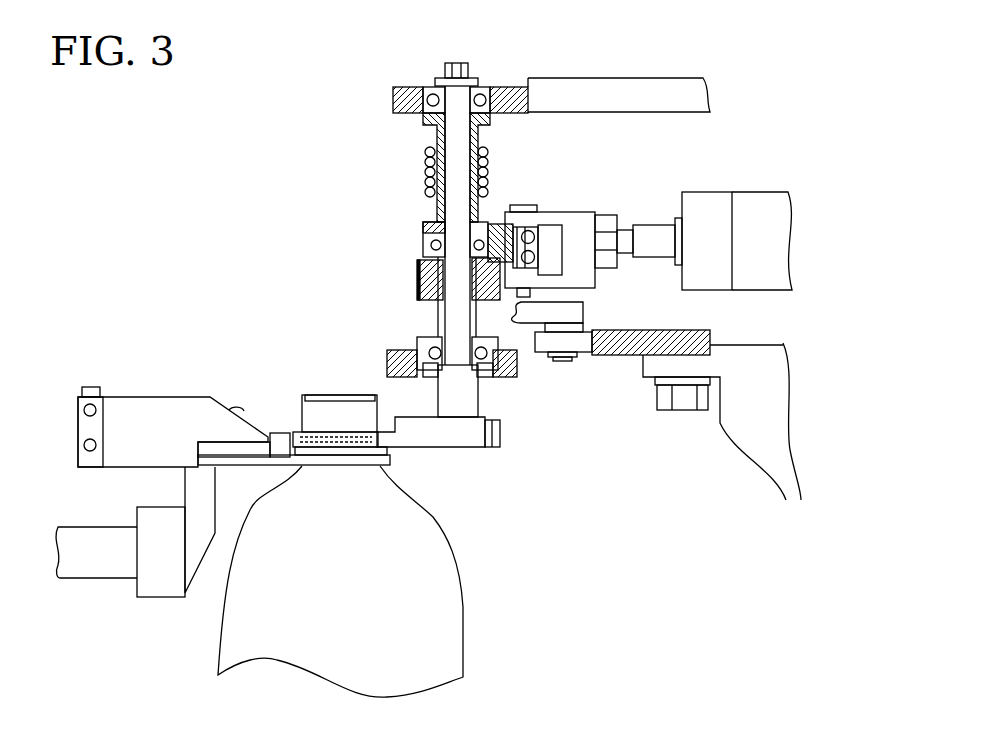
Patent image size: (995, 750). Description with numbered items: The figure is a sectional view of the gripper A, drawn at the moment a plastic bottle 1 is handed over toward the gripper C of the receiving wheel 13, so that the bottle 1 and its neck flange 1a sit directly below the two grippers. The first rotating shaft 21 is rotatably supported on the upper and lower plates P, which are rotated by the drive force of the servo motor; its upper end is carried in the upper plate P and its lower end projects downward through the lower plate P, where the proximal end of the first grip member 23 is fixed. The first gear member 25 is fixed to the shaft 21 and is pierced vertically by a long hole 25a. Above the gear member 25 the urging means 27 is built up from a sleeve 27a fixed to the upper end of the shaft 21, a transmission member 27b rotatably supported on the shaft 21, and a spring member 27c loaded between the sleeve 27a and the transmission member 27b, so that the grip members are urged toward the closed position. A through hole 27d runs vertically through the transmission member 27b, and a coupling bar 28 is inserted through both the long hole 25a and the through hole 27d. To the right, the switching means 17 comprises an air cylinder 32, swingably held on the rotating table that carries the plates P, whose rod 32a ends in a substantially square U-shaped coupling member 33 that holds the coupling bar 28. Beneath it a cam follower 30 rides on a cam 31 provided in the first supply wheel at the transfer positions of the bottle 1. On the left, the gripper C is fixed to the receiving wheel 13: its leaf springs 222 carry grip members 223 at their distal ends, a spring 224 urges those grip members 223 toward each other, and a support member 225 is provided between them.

The plastic bottle 1 is at (450, 627).
The boss of body 1a is at (383, 450).
The receiving wheel 13 is at (90, 568).
The switching means 17 is at (755, 193).
The first rotating shaft 21 is at (452, 98).
The first grip member 23 is at (461, 438).
The first gear member 25 is at (430, 278).
The long hole 25a is at (515, 262).
The urging means 27 is at (489, 173).
The sleeve 27a is at (490, 122).
The transmission member 27b is at (423, 231).
The spring member 27c is at (430, 151).
The through hole 27d is at (527, 226).
The coupling bar 28 is at (521, 228).
The cam follower 30 is at (565, 340).
The cam 31 is at (643, 335).
The air cylinder 32 is at (746, 280).
The rod 32a is at (656, 232).
The coupling member 33 is at (584, 277).
The leaf spring 222 is at (197, 405).
The grip member 223 is at (257, 448).
The spring 224 is at (240, 405).
The support member 225 is at (279, 455).
The gripper A is at (580, 77).
The gripper C is at (163, 396).
The plate P is at (674, 86).